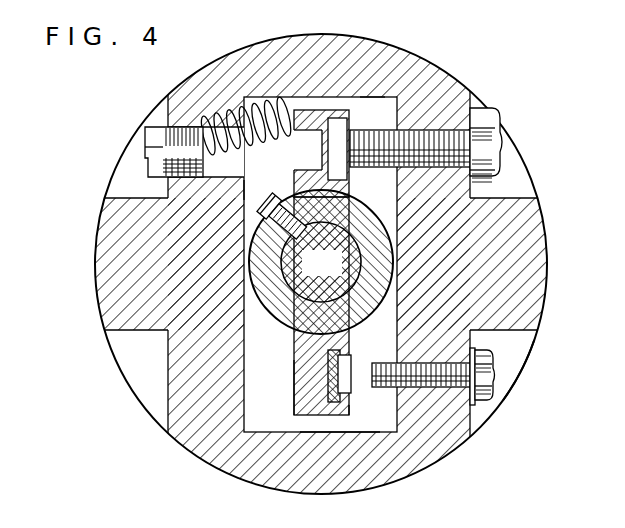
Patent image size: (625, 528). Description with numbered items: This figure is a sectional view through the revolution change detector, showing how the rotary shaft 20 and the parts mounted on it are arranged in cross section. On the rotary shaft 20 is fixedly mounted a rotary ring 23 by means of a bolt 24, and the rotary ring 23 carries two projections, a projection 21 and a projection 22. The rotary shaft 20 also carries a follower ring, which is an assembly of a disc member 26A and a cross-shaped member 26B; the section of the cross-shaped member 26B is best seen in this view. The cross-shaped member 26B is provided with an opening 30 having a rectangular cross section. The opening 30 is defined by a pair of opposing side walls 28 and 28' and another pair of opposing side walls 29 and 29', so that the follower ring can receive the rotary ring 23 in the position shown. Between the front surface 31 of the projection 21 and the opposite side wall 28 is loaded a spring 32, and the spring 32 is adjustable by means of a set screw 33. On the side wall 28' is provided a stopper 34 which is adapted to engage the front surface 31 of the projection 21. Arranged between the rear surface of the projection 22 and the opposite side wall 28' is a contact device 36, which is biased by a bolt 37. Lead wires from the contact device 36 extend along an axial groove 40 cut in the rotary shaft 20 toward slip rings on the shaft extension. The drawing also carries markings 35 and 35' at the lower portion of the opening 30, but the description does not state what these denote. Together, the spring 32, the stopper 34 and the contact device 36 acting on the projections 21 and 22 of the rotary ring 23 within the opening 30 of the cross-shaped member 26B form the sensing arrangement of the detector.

The rotary shaft 20 is at (280, 296).
The projection 21 is at (325, 100).
The projection 22 is at (297, 379).
The rotary ring 23 is at (355, 204).
The bolt 24 is at (265, 231).
The disc member 26A is at (517, 366).
The cross-shaped member 26B is at (548, 262).
The side wall 28 is at (223, 196).
The side wall 28' is at (356, 361).
The side wall 29 is at (375, 82).
The side wall 29' is at (363, 414).
The opening 30 is at (247, 345).
The front surface 31 is at (300, 110).
The spring 32 is at (250, 136).
The set screw 33 is at (179, 126).
The stopper 34 is at (427, 135).
The lower body wall 35 is at (340, 438).
The block edge 35' is at (273, 408).
The contact device 36 is at (355, 385).
The bolt 37 is at (434, 364).
The axial groove 40 is at (321, 262).